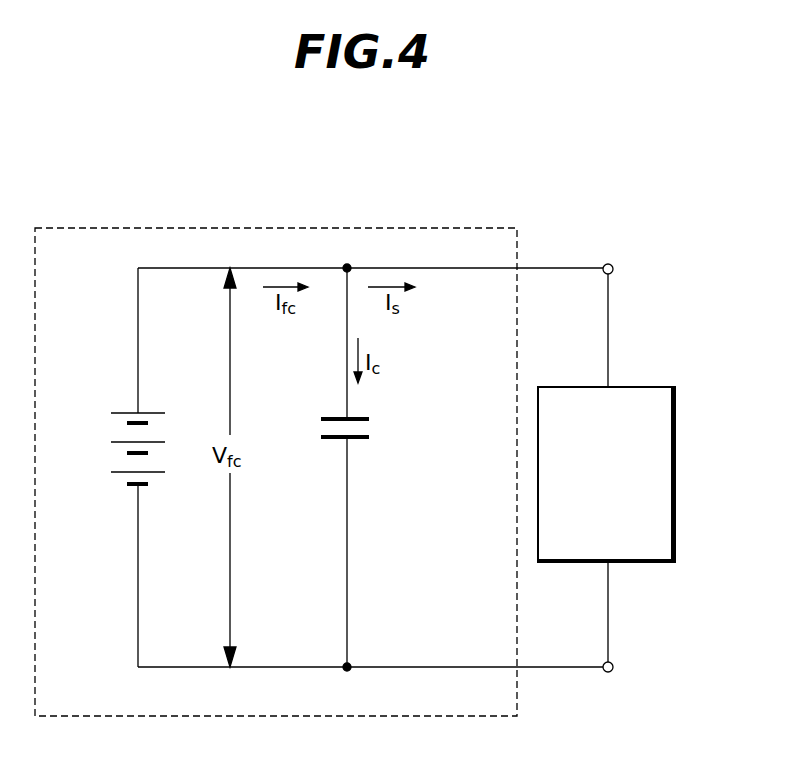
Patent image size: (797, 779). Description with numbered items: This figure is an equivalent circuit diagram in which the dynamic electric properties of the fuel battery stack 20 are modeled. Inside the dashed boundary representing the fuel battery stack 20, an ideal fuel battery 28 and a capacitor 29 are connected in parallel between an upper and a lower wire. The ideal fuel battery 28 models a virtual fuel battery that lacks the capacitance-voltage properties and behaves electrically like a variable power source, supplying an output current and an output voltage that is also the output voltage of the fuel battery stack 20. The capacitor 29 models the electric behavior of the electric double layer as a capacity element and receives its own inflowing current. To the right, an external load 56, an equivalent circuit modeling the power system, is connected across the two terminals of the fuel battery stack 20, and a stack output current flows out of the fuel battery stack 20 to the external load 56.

The fuel battery stack 20 is at (380, 226).
The ideal fuel battery 28 is at (112, 455).
The capacitor 29 is at (356, 440).
The external load 56 is at (677, 455).